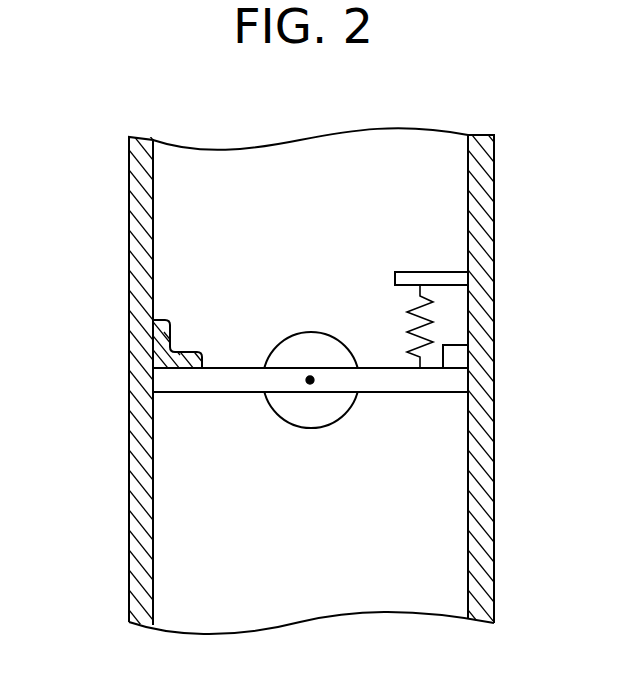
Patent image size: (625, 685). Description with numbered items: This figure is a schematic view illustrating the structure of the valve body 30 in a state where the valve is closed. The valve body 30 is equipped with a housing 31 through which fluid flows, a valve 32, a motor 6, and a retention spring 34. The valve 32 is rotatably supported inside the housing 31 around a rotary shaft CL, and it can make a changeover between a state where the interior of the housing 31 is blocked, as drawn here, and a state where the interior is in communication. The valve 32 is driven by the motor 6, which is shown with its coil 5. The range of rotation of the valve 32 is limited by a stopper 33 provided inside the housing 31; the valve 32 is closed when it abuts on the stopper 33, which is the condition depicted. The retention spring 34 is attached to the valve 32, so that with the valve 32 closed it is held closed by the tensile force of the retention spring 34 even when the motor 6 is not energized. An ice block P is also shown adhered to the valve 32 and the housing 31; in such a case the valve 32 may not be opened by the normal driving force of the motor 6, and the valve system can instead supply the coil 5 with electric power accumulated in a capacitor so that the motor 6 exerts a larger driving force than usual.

The valve body 30 is at (257, 370).
The housing 31 is at (128, 247).
The valve 32 is at (190, 386).
The stopper 33 is at (455, 360).
The retention spring 34 is at (427, 320).
The motor 6 is at (193, 395).
The coil 5 is at (287, 413).
The ice block P is at (190, 348).
The rotary shaft CL is at (310, 378).